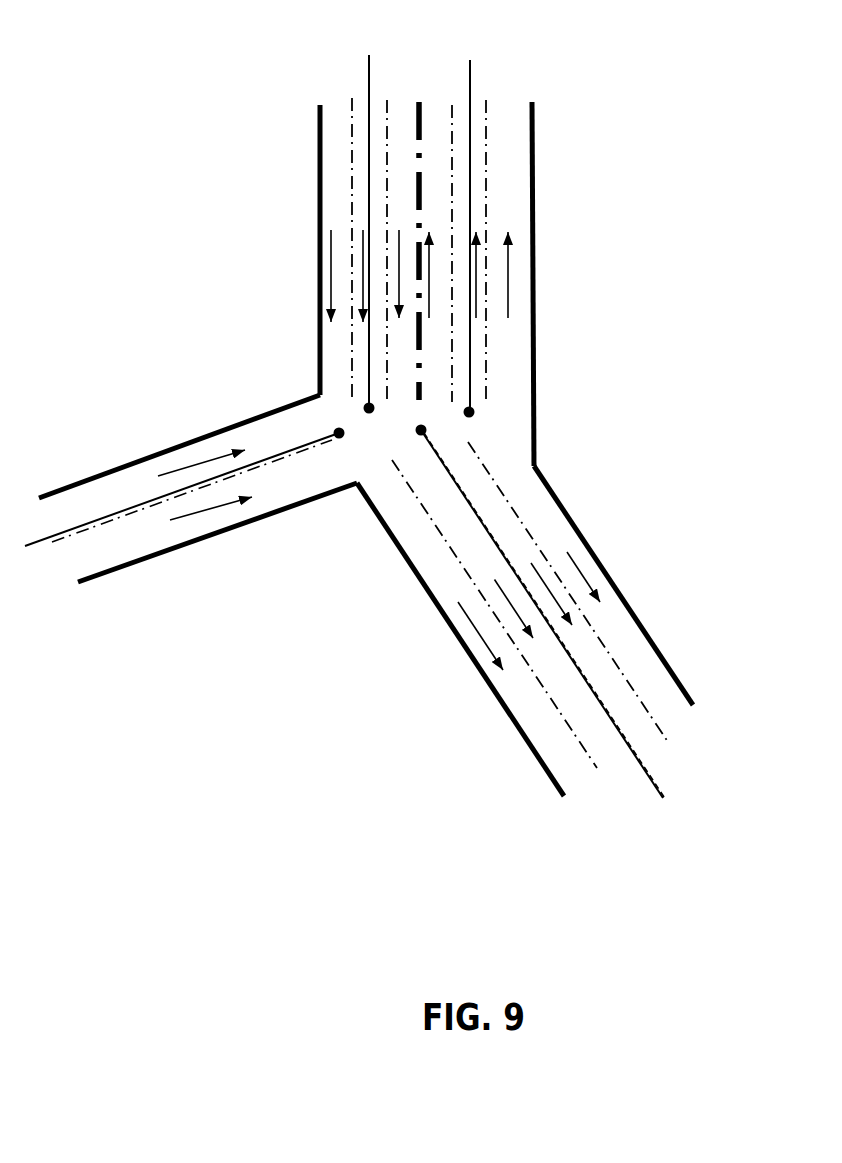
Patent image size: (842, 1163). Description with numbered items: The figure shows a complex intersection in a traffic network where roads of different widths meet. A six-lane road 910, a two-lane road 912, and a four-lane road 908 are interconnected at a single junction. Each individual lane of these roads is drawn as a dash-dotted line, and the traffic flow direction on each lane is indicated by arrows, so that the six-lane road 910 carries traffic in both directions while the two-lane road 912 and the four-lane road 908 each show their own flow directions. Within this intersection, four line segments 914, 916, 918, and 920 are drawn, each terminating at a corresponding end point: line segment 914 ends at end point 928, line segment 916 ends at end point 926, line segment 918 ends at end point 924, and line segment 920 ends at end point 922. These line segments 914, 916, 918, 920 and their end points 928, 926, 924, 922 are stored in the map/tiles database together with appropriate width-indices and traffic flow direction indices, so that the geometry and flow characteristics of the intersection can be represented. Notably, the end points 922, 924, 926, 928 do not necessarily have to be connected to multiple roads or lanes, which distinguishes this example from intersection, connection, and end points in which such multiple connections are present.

The 4-lane road 908 is at (625, 598).
The 6-lane road 910 is at (533, 180).
The 2-lane road 912 is at (192, 545).
The line segment 914 is at (470, 93).
The line segment 916 is at (369, 93).
The line segment 918 is at (313, 447).
The line segment 920 is at (447, 472).
The end point 922 is at (424, 429).
The end point 924 is at (338, 433).
The end point 926 is at (372, 406).
The end point 928 is at (473, 410).